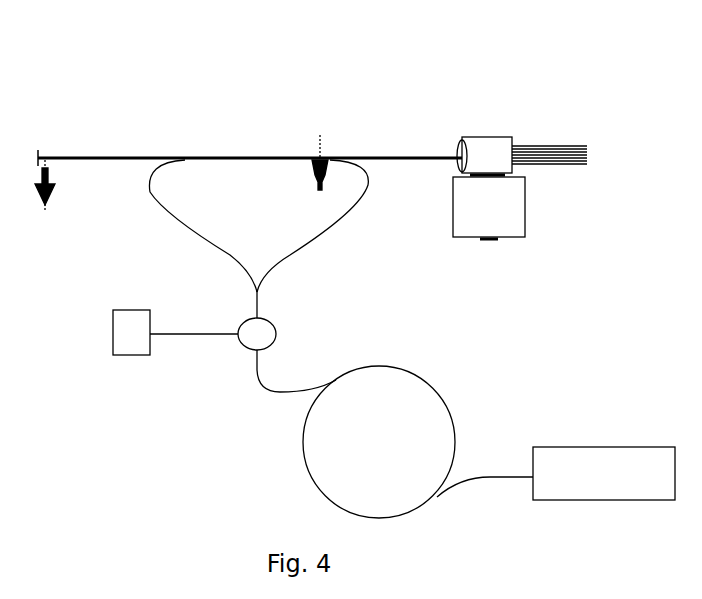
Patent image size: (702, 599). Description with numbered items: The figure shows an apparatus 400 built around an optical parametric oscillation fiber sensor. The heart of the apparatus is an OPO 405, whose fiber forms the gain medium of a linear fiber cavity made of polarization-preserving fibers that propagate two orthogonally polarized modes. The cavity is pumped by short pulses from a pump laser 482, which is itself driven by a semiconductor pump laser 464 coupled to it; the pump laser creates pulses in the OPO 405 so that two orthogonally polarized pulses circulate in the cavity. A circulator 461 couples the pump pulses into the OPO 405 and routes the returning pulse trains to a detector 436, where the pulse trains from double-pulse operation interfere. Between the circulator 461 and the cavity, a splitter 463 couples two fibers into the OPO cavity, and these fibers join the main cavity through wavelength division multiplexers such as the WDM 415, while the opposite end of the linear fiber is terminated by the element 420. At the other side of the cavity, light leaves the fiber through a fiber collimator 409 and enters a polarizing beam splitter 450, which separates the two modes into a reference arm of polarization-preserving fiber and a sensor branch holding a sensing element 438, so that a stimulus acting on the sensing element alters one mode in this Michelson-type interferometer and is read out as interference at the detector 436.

The apparatus 400 is at (166, 68).
The OPO 405 is at (401, 130).
The fiber collimator 409 is at (458, 152).
The wavelength division multiplexer 415 is at (308, 170).
The fiber end wavelength division multiplexer 420 is at (62, 183).
The detector 436 is at (114, 311).
The sensing element 438 is at (525, 230).
The polarizing beam splitter 450 is at (495, 136).
The circulator 461 is at (265, 338).
The splitter 463 is at (267, 303).
The pump laser 482 is at (445, 455).
The semiconductor pump laser 464 is at (597, 447).